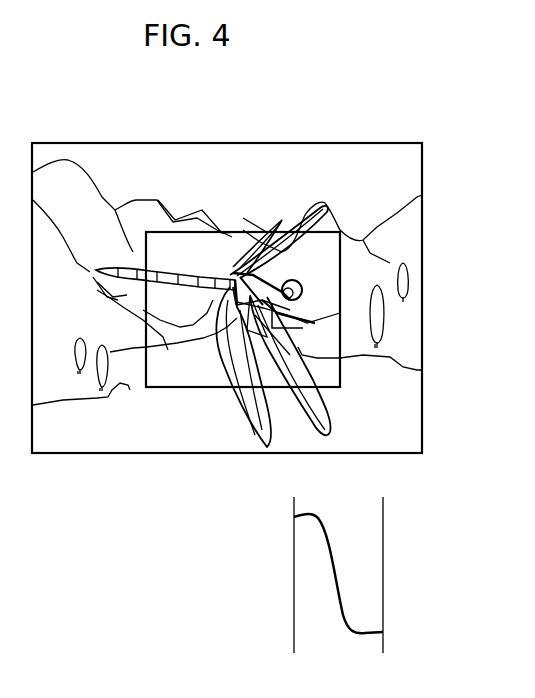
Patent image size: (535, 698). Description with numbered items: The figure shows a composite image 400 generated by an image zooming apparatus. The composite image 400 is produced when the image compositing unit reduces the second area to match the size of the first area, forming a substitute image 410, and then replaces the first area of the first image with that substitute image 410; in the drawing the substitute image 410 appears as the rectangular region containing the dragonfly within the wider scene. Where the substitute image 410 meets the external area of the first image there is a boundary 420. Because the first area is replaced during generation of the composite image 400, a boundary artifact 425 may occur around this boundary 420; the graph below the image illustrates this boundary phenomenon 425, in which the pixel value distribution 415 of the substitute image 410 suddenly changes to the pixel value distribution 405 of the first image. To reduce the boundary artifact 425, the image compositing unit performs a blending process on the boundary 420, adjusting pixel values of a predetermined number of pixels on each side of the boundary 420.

The composite image 400 is at (322, 143).
The substitute image 410 is at (222, 255).
The boundary 420 is at (287, 327).
The boundary artifact 425 is at (330, 528).
The pixel value distribution of the substitute image 415 is at (294, 589).
The pixel value distribution of the first image 405 is at (383, 589).